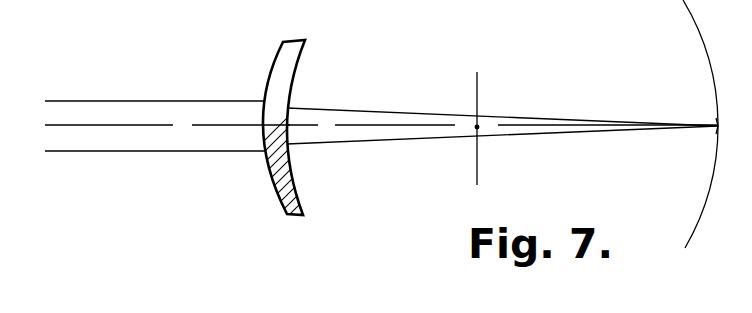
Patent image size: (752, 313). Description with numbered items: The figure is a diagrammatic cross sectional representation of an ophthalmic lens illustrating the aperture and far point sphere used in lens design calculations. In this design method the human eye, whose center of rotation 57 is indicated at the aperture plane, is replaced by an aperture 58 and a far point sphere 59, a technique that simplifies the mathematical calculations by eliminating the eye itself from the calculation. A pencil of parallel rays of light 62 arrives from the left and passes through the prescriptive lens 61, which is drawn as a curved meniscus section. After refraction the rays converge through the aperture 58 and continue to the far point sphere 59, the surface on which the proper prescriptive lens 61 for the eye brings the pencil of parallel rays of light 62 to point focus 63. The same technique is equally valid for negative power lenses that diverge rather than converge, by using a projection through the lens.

The center of rotation 57 is at (477, 127).
The aperture 58 is at (469, 116).
The far point sphere 59 is at (698, 33).
The prescriptive lens 61 is at (283, 52).
The pencil of parallel rays of light 62 is at (155, 117).
The point focus 63 is at (714, 130).